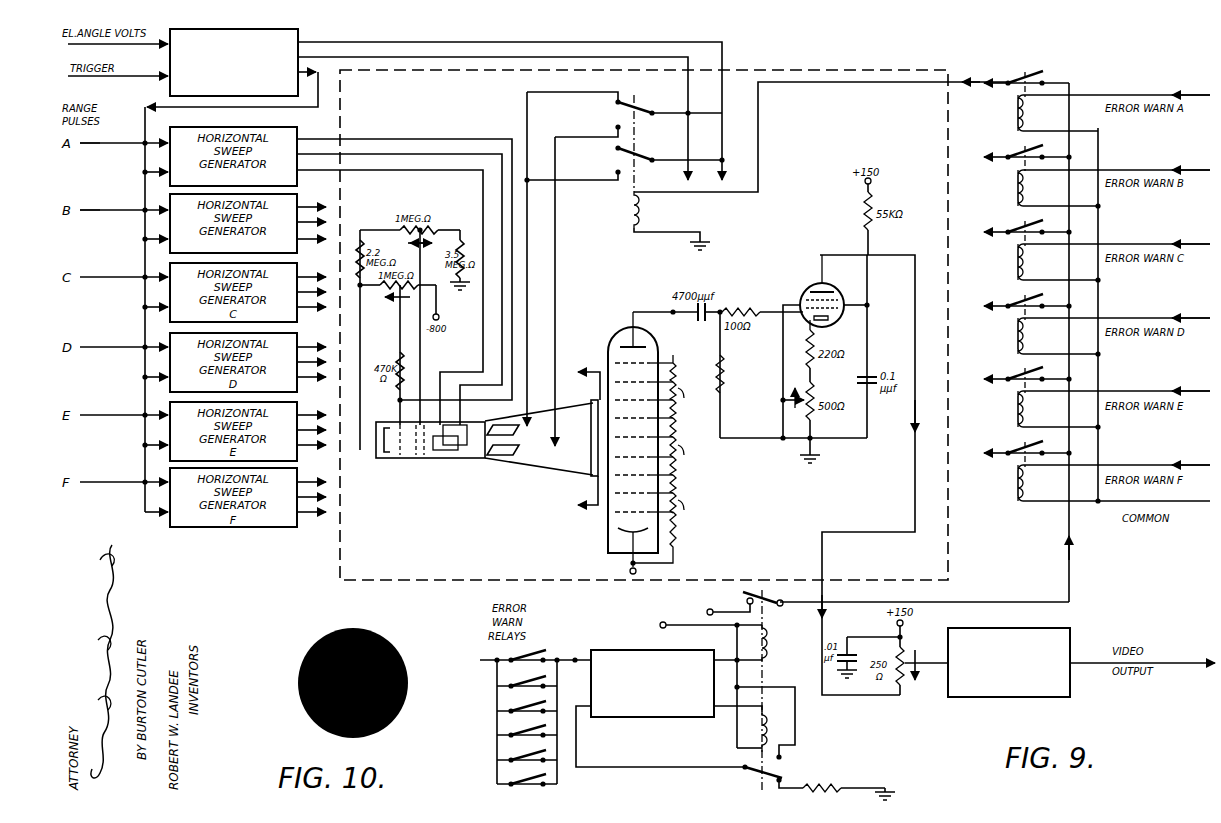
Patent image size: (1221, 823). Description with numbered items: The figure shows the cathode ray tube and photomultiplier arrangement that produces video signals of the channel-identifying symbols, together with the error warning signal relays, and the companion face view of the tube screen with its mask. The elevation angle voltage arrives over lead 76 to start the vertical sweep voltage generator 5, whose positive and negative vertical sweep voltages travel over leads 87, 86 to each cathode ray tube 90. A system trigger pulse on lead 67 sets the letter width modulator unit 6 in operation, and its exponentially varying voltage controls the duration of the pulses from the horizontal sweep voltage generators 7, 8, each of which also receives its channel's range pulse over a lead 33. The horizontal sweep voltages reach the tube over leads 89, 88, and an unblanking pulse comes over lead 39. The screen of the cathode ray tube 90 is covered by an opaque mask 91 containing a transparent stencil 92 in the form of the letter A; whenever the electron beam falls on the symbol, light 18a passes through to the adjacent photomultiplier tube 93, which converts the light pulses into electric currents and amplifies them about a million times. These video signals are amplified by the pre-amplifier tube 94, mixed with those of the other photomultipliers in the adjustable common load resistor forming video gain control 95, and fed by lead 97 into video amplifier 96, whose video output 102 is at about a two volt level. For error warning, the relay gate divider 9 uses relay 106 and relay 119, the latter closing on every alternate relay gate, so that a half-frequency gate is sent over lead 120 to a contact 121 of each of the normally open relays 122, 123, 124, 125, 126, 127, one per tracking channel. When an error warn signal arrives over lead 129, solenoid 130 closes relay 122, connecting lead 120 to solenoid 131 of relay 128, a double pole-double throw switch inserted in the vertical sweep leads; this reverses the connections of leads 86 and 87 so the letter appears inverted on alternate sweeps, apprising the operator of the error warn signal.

In FIG. 9, the vertical sweep voltage generator 5 is at (298, 36).
In FIG. 9, the lead 76 is at (98, 44).
In FIG. 9, the lead 67 is at (108, 76).
In FIG. 9, the letter width modulator unit 6 is at (160, 84).
In FIG. 9, the horizontal sweep voltage generator 7 is at (294, 130).
In FIG. 9, the horizontal sweep voltage generator 8 is at (296, 198).
In FIG. 9, the lead 33 is at (106, 144).
In FIG. 9, the lead 86 is at (564, 48).
In FIG. 9, the lead 87 is at (642, 54).
In FIG. 9, the lead 39 is at (484, 140).
In FIG. 9, the lead 88 is at (466, 166).
In FIG. 9, the lead 89 is at (388, 166).
In FIG. 9, the relay 128 is at (614, 190).
In FIG. 9, the solenoid 131 is at (641, 212).
In FIG. 9, the contact 121 is at (1018, 227).
In FIG. 9, the lead 129 is at (1114, 94).
In FIG. 9, the solenoid 130 is at (1028, 108).
In FIG. 9, the relay 122 is at (1004, 104).
In FIG. 9, the relay 123 is at (1004, 178).
In FIG. 9, the relay 124 is at (1004, 252).
In FIG. 9, the relay 125 is at (1004, 326).
In FIG. 9, the relay 126 is at (1004, 400).
In FIG. 9, the relay 127 is at (1004, 474).
In FIG. 9, the cathode ray tube 90 is at (532, 464).
In FIG. 9, the opaque mask 91 is at (594, 404).
In FIG. 10, the opaque mask 91 is at (404, 715).
In FIG. 9, the light beam 18a is at (580, 440).
In FIG. 9, the photomultiplier tube 93 is at (610, 340).
In FIG. 9, the video pre-amplifier 94 is at (806, 294).
In FIG. 9, the lead 120 is at (1010, 604).
In FIG. 9, the video gain control 95 is at (906, 688).
In FIG. 9, the lead 97 is at (922, 664).
In FIG. 9, the video amplifier 96 is at (1062, 628).
In FIG. 9, the video output line 102 is at (1096, 666).
In FIG. 9, the relay gate divider 9 is at (620, 718).
In FIG. 9, the relay 119 is at (772, 616).
In FIG. 9, the relay 106 is at (742, 751).
In FIG. 10, the stencil 92 is at (356, 658).